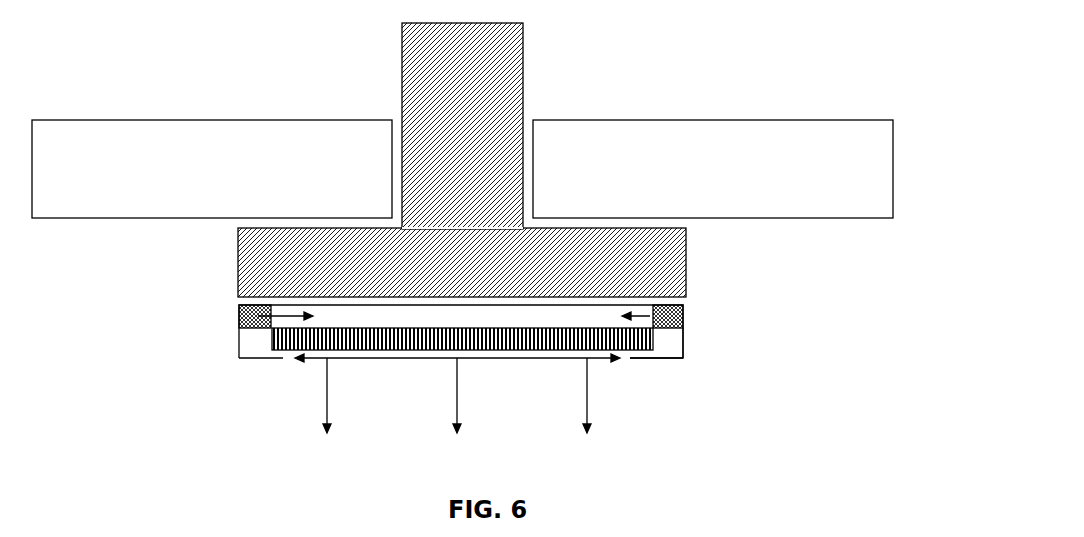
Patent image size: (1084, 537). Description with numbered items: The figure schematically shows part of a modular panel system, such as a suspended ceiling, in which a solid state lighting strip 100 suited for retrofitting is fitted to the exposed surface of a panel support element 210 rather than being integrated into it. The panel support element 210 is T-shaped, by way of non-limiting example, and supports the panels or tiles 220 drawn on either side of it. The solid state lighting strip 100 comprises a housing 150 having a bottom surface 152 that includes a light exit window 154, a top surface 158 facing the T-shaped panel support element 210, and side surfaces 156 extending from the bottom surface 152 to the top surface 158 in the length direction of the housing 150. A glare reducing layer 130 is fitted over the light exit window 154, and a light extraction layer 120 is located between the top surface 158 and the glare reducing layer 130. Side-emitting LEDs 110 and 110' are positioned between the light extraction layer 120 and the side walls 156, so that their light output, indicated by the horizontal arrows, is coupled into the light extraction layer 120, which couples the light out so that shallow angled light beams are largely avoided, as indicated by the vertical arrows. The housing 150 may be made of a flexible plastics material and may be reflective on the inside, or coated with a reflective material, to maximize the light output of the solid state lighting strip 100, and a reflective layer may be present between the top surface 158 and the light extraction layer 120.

The solid state lighting strip 100 is at (205, 383).
The side-emitting LED 110 is at (264, 372).
The side-emitting LED 110' is at (719, 311).
The light extraction layer 120 is at (407, 312).
The glare reducing layer 130 is at (363, 337).
The housing 150 is at (685, 358).
The bottom surface 152 is at (655, 358).
The light exit window 154 is at (557, 358).
The side surface 156 is at (685, 343).
The top surface 158 is at (512, 305).
The panel support element 210 is at (502, 50).
The panel or tile 220 is at (805, 132).